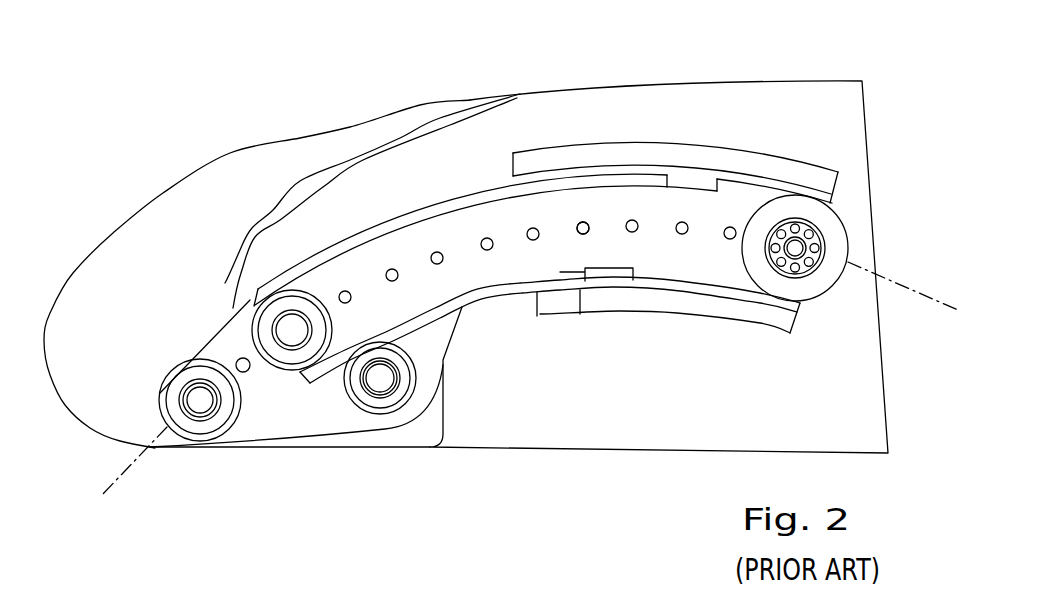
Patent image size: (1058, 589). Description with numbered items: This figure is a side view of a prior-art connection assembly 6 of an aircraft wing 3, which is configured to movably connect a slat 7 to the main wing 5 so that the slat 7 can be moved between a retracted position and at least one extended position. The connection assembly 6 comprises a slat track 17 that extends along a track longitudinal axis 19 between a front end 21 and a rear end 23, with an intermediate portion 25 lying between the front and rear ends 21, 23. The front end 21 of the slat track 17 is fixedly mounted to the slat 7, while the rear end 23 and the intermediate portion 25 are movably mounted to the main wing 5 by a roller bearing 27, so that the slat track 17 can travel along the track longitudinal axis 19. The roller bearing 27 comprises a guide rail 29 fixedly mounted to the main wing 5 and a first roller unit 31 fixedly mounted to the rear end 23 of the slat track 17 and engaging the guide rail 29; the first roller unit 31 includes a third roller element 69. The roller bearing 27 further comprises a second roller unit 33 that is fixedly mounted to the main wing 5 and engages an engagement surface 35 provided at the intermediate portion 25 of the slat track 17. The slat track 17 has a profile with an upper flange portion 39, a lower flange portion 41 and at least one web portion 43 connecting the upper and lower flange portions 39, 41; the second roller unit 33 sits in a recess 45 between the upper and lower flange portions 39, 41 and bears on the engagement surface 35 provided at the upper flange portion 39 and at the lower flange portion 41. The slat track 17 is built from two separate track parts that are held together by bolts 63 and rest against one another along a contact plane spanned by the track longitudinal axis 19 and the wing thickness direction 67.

The wing 3 is at (117, 154).
The main wing 5 is at (752, 384).
The connection assembly 6 is at (540, 132).
The slat 7 is at (123, 316).
The slat track 17 is at (458, 216).
The track longitudinal axis 19 is at (943, 303).
The front end 21 is at (300, 415).
The rear end 23 is at (767, 185).
The intermediate portion 25 is at (510, 272).
The roller bearing 27 is at (546, 227).
The guide rail 29 is at (723, 155).
The first roller unit 31 is at (820, 282).
The second roller unit 33 is at (300, 293).
The engagement surface 35 is at (500, 190).
The upper flange portion 39 is at (400, 216).
The lower flange portion 41 is at (574, 272).
The web portion 43 is at (552, 252).
The recess 45 is at (594, 234).
The bolts 63 is at (344, 290).
The wing thickness direction 67 is at (845, 18).
The third roller element 69 is at (835, 235).